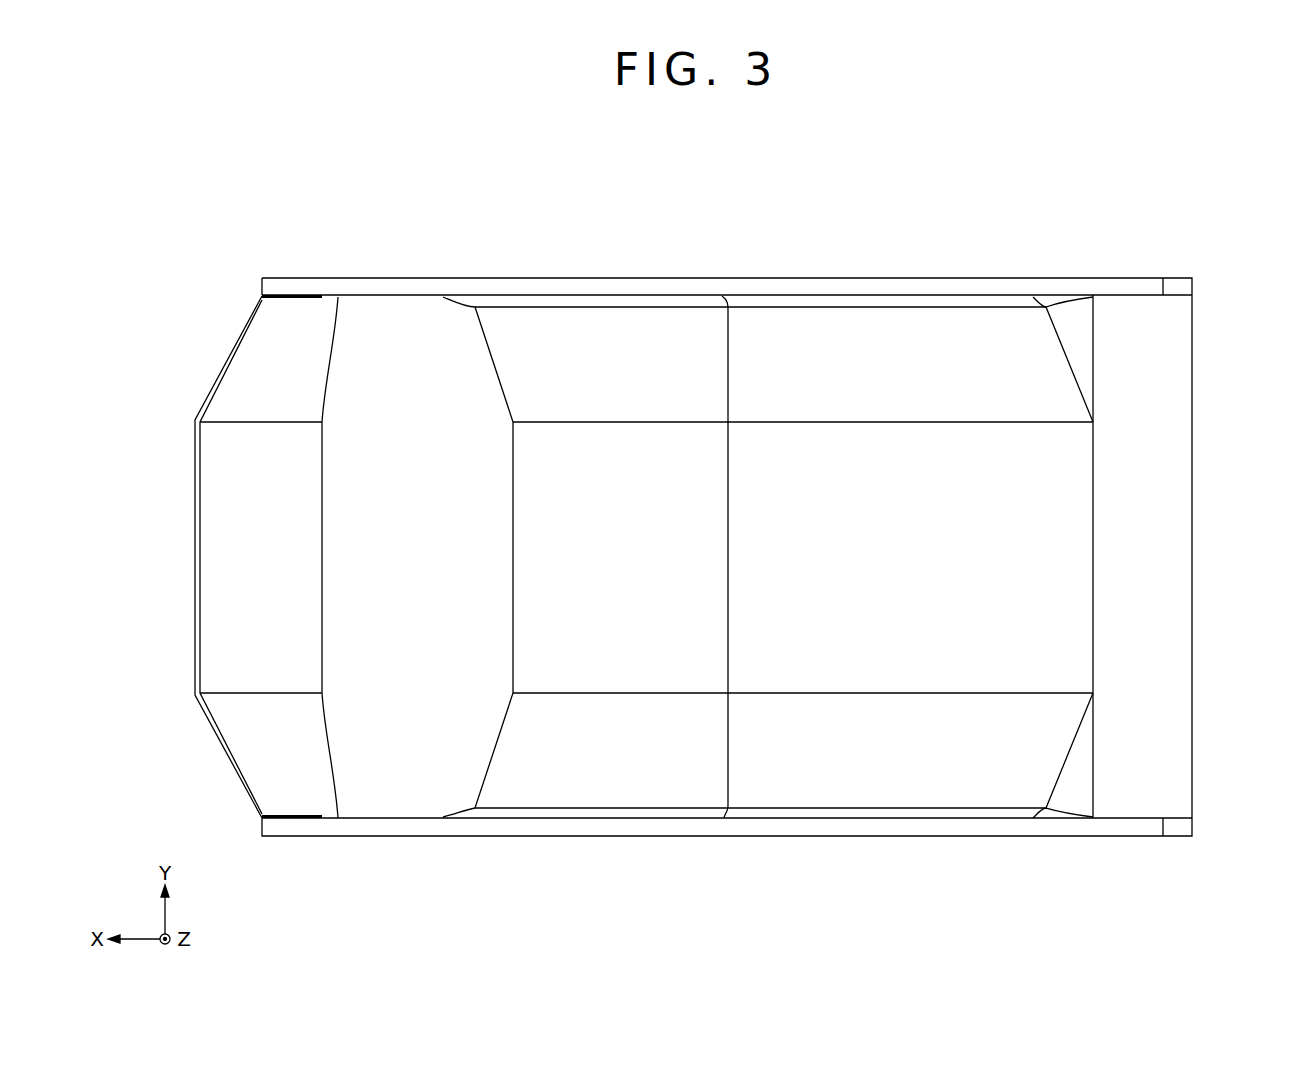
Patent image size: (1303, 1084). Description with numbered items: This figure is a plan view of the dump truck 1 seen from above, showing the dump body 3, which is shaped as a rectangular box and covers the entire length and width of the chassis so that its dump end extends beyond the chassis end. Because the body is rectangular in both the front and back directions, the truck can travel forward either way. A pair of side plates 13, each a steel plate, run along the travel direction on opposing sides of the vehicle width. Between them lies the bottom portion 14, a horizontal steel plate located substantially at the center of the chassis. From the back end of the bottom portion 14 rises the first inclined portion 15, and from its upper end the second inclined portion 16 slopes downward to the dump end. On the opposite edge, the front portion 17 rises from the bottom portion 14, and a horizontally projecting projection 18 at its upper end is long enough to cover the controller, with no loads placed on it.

The vehicle 1 is at (913, 170).
The dump body 3 is at (617, 288).
The side plates 13 is at (737, 288).
The bottom portion 14 is at (617, 462).
The first inclined portion 15 is at (810, 362).
The second inclined portion 16 is at (1178, 487).
The front portion 17 is at (380, 365).
The projection 18 is at (245, 410).